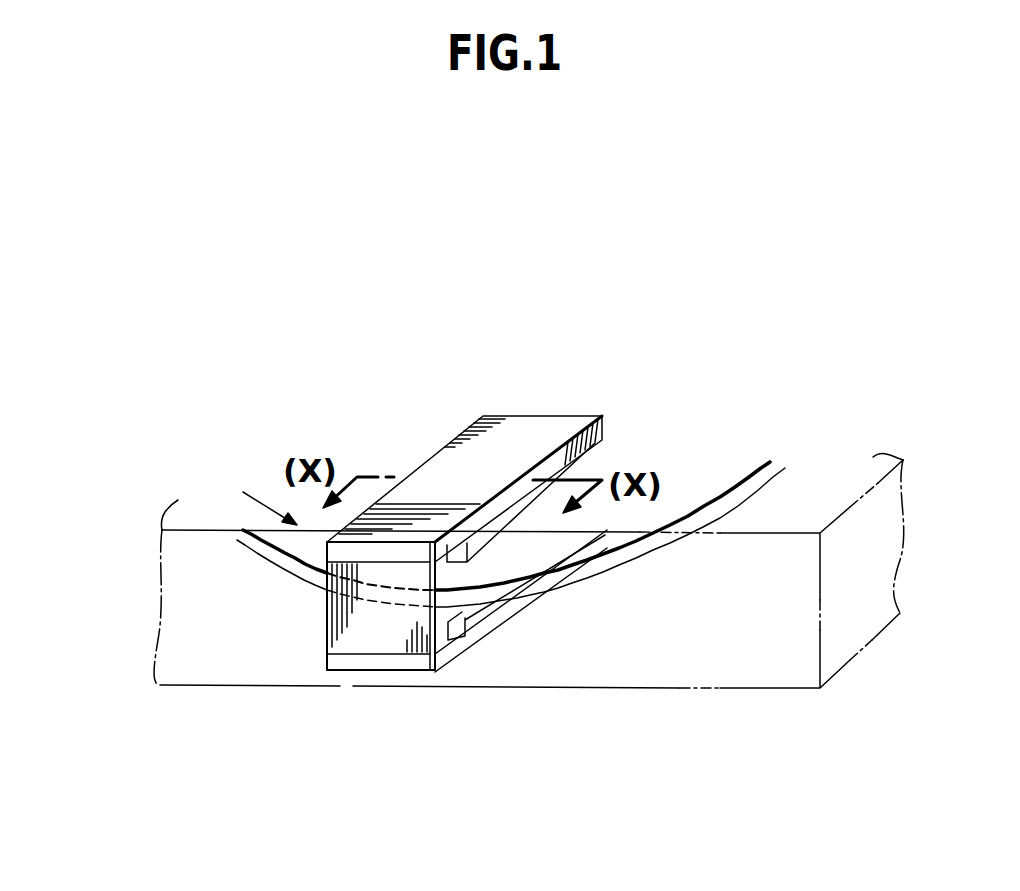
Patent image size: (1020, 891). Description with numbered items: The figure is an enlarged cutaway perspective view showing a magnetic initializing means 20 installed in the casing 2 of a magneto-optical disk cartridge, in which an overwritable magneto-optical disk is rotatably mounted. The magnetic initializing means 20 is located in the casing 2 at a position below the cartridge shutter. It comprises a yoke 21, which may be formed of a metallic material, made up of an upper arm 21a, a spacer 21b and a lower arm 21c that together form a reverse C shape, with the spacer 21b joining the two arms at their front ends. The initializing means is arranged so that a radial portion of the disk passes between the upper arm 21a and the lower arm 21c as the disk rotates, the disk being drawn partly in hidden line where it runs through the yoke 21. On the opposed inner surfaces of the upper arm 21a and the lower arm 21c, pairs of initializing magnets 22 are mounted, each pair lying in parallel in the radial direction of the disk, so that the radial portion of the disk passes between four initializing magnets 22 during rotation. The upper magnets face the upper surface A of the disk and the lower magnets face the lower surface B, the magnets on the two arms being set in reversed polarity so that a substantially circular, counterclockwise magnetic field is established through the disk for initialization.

The casing 2 is at (662, 695).
The magnetic initializing means 20 is at (312, 611).
The yoke 21 is at (504, 542).
The upper arm 21a is at (447, 452).
The spacer 21b is at (377, 650).
The lower arm 21c is at (485, 630).
The initializing magnets 22 is at (587, 452).
The upper surface of the magneto-optical disk A is at (303, 543).
The lower surface of the magneto-optical disk B is at (650, 585).